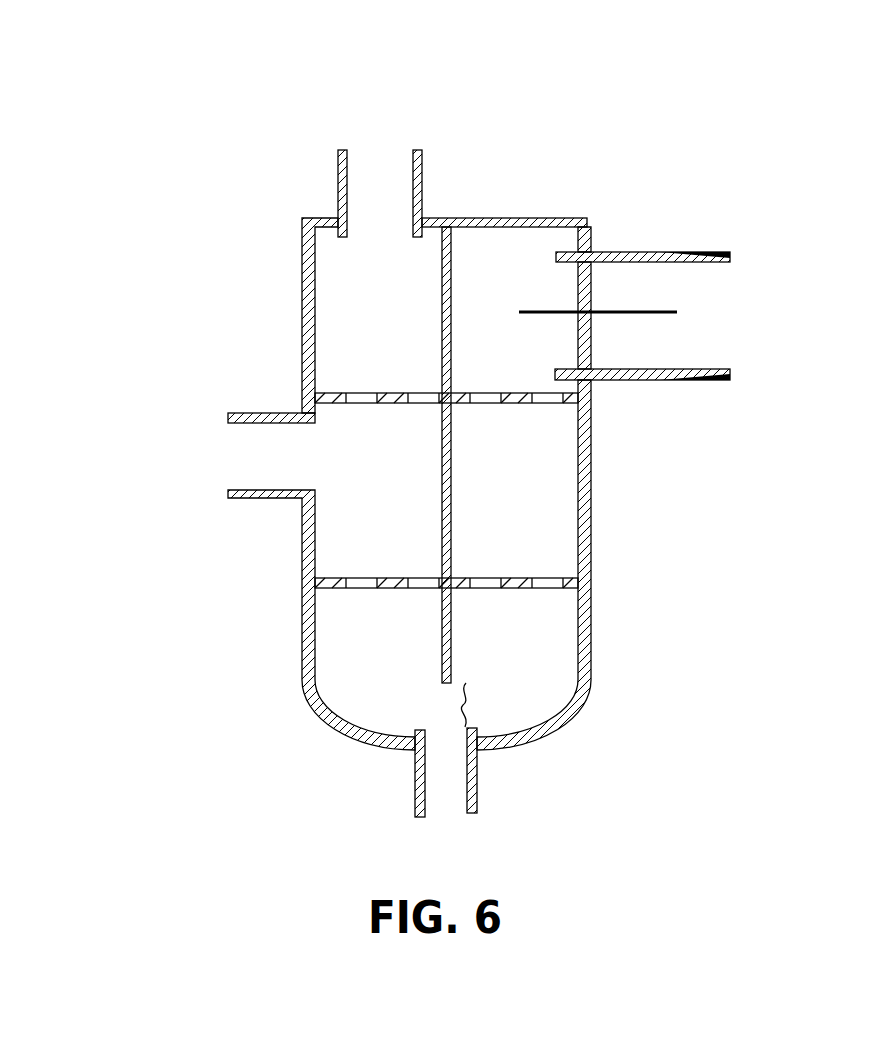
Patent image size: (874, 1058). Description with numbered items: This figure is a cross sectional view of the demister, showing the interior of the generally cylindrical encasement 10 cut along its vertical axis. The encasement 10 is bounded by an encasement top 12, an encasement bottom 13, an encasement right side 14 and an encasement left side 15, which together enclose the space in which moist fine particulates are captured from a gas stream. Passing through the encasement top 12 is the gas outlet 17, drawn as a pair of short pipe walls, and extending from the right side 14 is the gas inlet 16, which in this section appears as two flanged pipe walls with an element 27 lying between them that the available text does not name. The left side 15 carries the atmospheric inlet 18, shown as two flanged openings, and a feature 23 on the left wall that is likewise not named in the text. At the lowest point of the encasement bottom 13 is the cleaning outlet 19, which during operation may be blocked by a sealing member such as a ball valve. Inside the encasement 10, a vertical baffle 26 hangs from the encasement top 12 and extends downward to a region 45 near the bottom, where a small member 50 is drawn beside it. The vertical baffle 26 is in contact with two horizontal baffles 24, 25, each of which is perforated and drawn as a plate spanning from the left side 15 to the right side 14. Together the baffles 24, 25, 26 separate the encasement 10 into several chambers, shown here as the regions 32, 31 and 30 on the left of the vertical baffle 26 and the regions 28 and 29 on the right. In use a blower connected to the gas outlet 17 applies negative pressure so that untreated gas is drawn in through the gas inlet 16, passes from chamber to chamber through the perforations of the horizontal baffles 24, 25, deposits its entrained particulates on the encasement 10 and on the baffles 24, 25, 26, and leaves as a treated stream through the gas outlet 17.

The encasement 10 is at (301, 258).
The encasement top 12 is at (502, 218).
The encasement bottom 13 is at (507, 748).
The encasement right side 14 is at (592, 590).
The encasement left side 15 is at (301, 398).
The gas inlet 16 is at (733, 295).
The gas outlet 17 is at (370, 143).
The atmospheric inlet 18 is at (236, 453).
The cleaning outlet 19 is at (447, 813).
The opening 23 is at (322, 333).
The horizontal baffle 24 is at (380, 402).
The horizontal baffle 25 is at (405, 590).
The vertical baffle 26 is at (450, 520).
The deflector plate 27 is at (660, 315).
The upper right chamber 28 is at (523, 473).
The lower right chamber 29 is at (517, 665).
The lower left chamber 30 is at (348, 648).
The middle left chamber 31 is at (377, 482).
The upper left chamber 32 is at (348, 308).
The bottom gap 45 is at (437, 670).
The support rod 50 is at (470, 707).